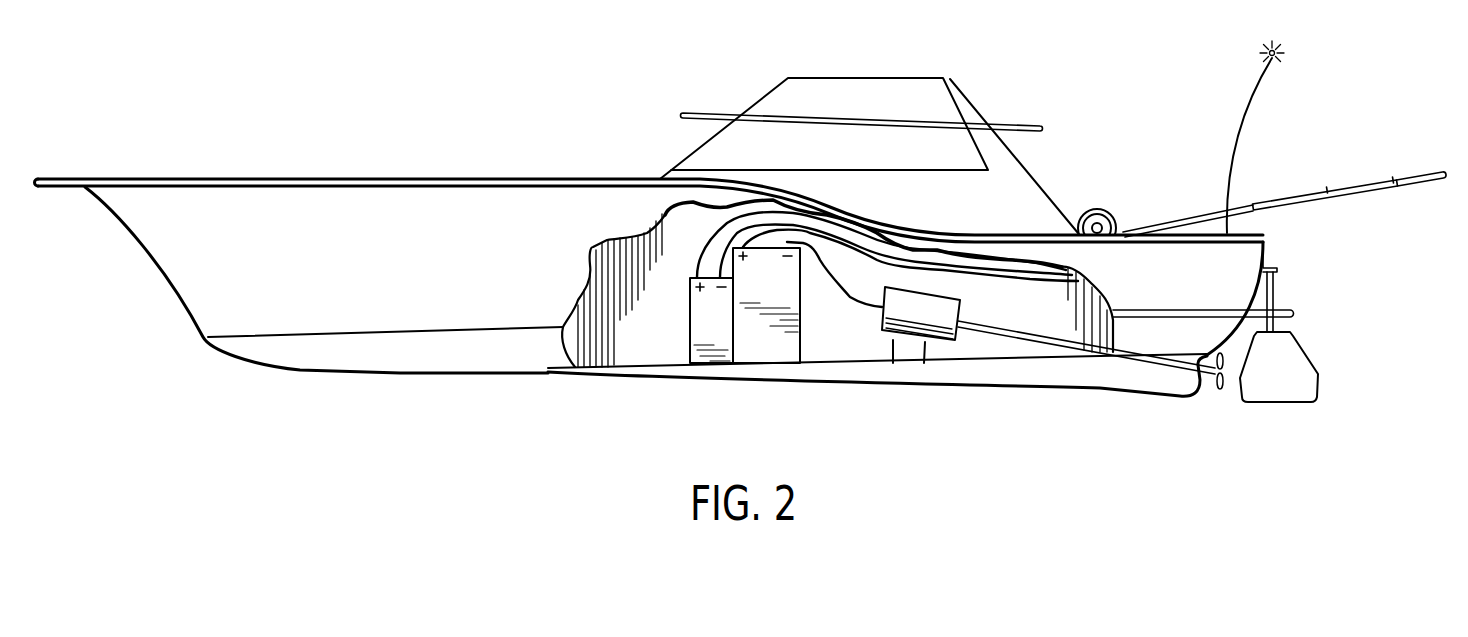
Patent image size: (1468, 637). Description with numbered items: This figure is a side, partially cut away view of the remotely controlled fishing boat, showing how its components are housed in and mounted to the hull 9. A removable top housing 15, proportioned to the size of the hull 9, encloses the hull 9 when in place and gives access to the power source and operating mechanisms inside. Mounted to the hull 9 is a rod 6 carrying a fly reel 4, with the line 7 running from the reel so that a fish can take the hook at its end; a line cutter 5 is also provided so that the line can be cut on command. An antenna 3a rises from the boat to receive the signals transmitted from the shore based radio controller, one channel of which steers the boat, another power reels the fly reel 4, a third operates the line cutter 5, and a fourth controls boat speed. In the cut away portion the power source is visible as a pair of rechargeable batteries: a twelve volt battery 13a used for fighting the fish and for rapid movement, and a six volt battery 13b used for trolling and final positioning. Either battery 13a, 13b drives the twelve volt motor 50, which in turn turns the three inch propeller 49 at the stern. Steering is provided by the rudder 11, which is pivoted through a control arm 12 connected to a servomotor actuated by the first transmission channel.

The hull 9 is at (403, 207).
The removable top housing 15 is at (721, 144).
The fly reel 4 is at (1103, 207).
The antenna 3a is at (1245, 117).
The line cutter 5 is at (1257, 207).
The rod 6 is at (1423, 193).
The line 7 is at (1277, 217).
The control arm 12 is at (1277, 265).
The rudder 11 is at (1293, 392).
The propeller 49 is at (1220, 390).
The motor 50 is at (953, 347).
The 12 volt battery 13a is at (777, 347).
The 6 volt battery 13b is at (707, 357).